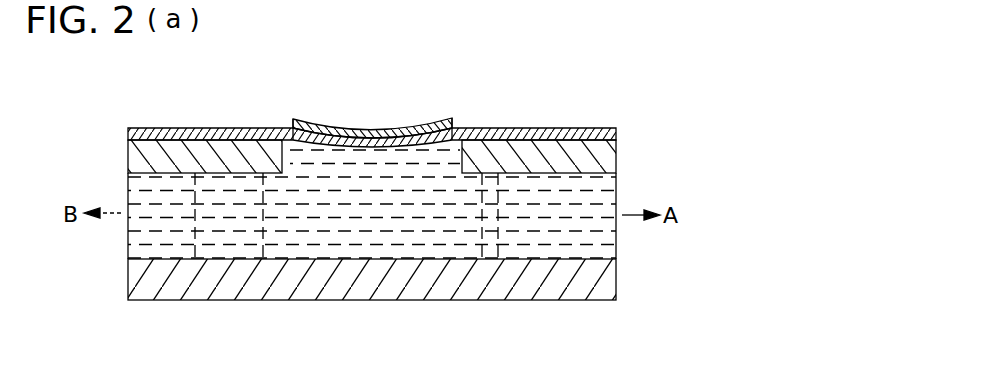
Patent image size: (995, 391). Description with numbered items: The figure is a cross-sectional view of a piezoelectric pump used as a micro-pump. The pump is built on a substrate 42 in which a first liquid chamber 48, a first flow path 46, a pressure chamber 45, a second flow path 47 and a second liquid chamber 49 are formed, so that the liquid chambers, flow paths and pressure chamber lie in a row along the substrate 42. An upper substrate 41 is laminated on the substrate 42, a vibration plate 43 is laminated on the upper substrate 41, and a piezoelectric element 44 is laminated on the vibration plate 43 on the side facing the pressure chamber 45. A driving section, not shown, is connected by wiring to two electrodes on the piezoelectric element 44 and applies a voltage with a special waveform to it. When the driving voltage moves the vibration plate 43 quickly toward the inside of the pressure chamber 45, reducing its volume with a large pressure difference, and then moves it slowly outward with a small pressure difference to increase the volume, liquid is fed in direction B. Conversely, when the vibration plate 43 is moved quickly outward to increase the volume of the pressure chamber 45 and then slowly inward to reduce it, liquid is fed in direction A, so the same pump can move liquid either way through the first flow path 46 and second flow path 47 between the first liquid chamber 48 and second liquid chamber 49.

The upper substrate 41 is at (598, 157).
The substrate 42 is at (607, 280).
The vibration plate 43 is at (283, 130).
The piezoelectric element 44 is at (368, 126).
The pressure chamber 45 is at (363, 237).
The first flow path 46 is at (488, 240).
The second flow path 47 is at (225, 237).
The first liquid chamber 48 is at (533, 240).
The second liquid chamber 49 is at (163, 237).